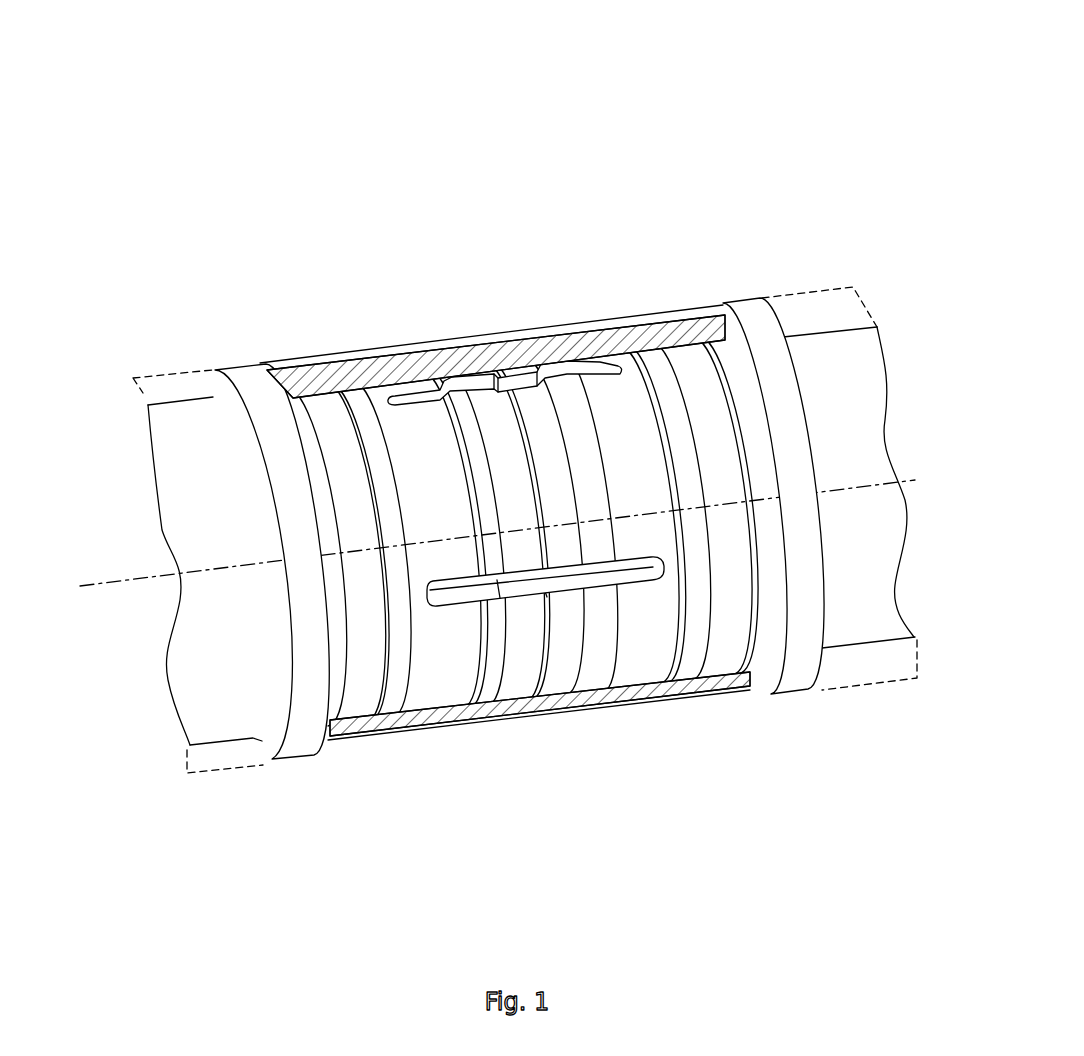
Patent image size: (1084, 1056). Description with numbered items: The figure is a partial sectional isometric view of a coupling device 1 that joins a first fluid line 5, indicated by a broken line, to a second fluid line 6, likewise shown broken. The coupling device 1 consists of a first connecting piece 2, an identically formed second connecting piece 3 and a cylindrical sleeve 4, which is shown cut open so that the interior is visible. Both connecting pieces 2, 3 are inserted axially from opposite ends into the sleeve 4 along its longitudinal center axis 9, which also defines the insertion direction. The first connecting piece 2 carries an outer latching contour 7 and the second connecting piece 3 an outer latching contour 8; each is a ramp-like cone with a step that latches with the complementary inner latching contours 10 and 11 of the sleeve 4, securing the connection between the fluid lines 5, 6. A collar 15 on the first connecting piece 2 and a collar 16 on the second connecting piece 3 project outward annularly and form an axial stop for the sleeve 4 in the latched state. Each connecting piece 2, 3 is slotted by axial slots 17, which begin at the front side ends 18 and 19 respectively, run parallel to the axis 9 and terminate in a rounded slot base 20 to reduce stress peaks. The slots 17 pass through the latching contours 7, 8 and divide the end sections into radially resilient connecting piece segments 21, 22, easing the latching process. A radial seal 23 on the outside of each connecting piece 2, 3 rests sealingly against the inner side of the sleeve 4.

The coupling device 1 is at (768, 174).
The first connecting piece 2 is at (177, 390).
The second connecting piece 3 is at (836, 314).
The sleeve 4 is at (389, 745).
The first fluid line 5 is at (218, 757).
The second fluid line 6 is at (866, 668).
The outer latching contour 7 is at (452, 388).
The outer latching contour 8 is at (594, 690).
The longitudinal center axis 9 is at (113, 581).
The latching contour 10 is at (410, 377).
The latching contour 11 is at (627, 690).
The collar 15 is at (247, 368).
The collar 16 is at (742, 305).
The axial slot 17 is at (484, 388).
The front side end 18 is at (558, 690).
The front side end 19 is at (538, 660).
The rounded slot base 20 is at (400, 394).
The connecting piece segment 21 is at (419, 521).
The connecting piece segment 22 is at (620, 486).
The radial seal 23 is at (328, 410).